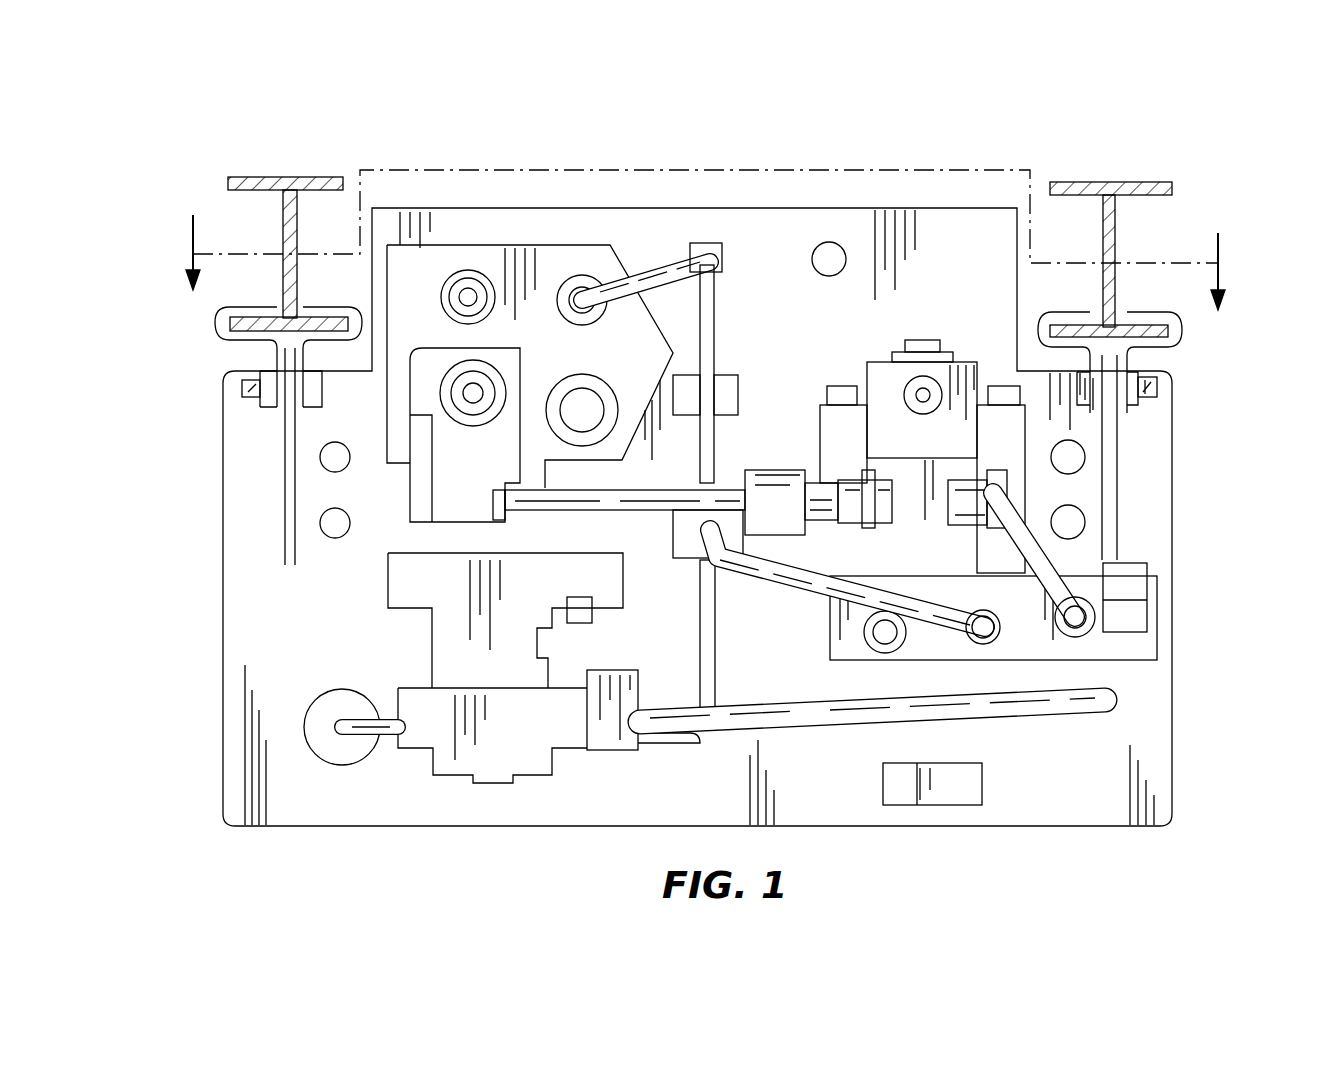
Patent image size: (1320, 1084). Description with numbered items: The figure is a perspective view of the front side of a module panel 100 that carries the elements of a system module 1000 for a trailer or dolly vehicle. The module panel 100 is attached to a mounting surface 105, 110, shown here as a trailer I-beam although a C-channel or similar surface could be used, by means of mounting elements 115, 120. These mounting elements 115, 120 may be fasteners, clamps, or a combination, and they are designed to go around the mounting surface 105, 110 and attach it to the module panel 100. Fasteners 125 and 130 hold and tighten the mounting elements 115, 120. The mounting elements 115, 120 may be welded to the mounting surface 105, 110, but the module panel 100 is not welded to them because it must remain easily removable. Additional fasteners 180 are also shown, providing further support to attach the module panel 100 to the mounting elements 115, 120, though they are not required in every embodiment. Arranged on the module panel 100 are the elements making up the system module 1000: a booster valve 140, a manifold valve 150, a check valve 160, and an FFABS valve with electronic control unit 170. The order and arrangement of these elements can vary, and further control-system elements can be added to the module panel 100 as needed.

The system module 1000 is at (706, 140).
The module panel 100 is at (781, 207).
The mounting surface 105 is at (266, 176).
The mounting surface 110 is at (1140, 181).
The mounting element 115 is at (218, 322).
The mounting element 120 is at (1182, 333).
The fastener 125 is at (262, 386).
The fastener 130 is at (1147, 390).
The booster valve 140 is at (1013, 455).
The manifold valve 150 is at (1125, 610).
The check valve 160 is at (985, 635).
The FFABS valve with electronic control unit 170 is at (400, 405).
The fasteners 180 is at (338, 462).